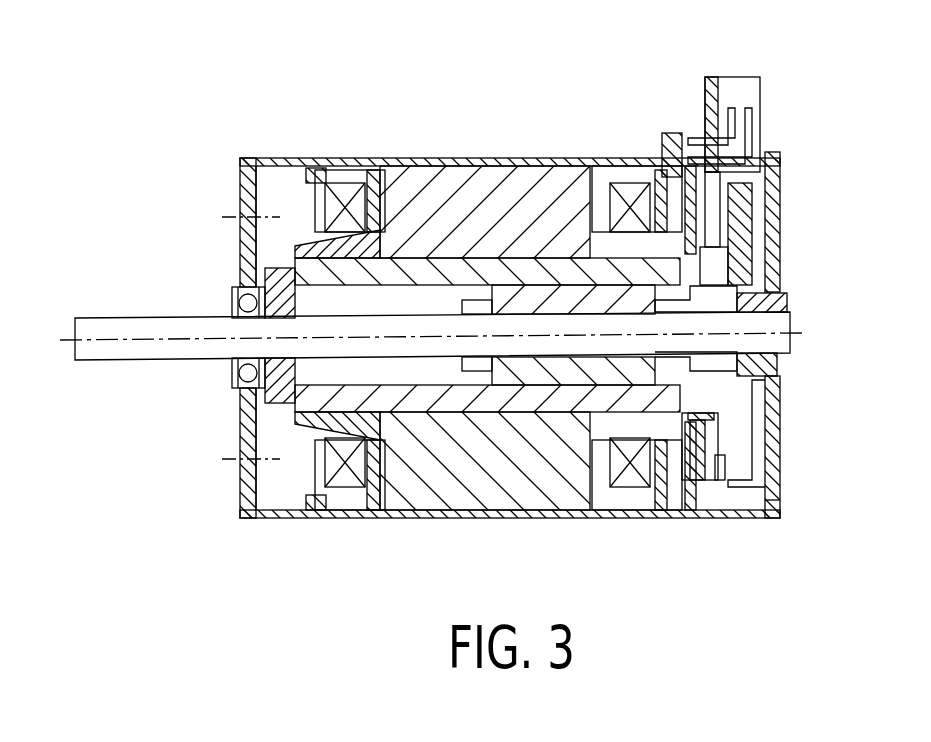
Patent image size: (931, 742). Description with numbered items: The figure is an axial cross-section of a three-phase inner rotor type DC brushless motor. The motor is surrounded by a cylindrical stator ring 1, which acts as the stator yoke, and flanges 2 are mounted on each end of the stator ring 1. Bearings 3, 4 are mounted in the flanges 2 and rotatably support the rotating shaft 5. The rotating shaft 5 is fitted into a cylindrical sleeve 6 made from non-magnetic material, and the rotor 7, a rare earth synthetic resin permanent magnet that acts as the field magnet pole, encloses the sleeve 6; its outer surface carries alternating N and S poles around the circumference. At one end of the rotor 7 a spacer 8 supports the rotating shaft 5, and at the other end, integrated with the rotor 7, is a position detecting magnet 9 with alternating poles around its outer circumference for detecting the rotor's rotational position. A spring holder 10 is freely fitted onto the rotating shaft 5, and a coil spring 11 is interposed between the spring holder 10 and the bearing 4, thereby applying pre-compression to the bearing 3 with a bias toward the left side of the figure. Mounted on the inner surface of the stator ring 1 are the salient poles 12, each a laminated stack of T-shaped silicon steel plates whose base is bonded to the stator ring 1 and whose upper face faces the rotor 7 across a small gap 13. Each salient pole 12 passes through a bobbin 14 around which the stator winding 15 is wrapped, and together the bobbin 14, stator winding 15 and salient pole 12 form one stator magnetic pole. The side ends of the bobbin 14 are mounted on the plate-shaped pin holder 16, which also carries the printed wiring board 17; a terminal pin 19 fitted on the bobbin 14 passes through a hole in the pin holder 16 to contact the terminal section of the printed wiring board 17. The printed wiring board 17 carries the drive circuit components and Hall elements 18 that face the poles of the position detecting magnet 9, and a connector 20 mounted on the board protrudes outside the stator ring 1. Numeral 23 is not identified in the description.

The stator ring 1 is at (332, 163).
The flange 2 is at (240, 498).
The bearing 3 is at (237, 383).
The bearing 4 is at (778, 362).
The rotating shaft 5 is at (130, 362).
The cylindrical sleeve 6 is at (556, 390).
The rotor 7 is at (250, 255).
The spacer 8 is at (243, 288).
The position detecting magnet 9 is at (735, 472).
The spring holder 10 is at (725, 289).
The coil spring 11 is at (765, 294).
The salient pole 12 is at (456, 175).
The gap 13 is at (444, 255).
The bobbin 14 is at (375, 178).
The stator winding 15 is at (626, 184).
The pin holder 16 is at (672, 134).
The printed wiring board 17 is at (712, 77).
The Hall element 18 is at (750, 488).
The terminal pin 19 is at (722, 218).
The connector 20 is at (740, 77).
The brush holder 23 is at (728, 472).